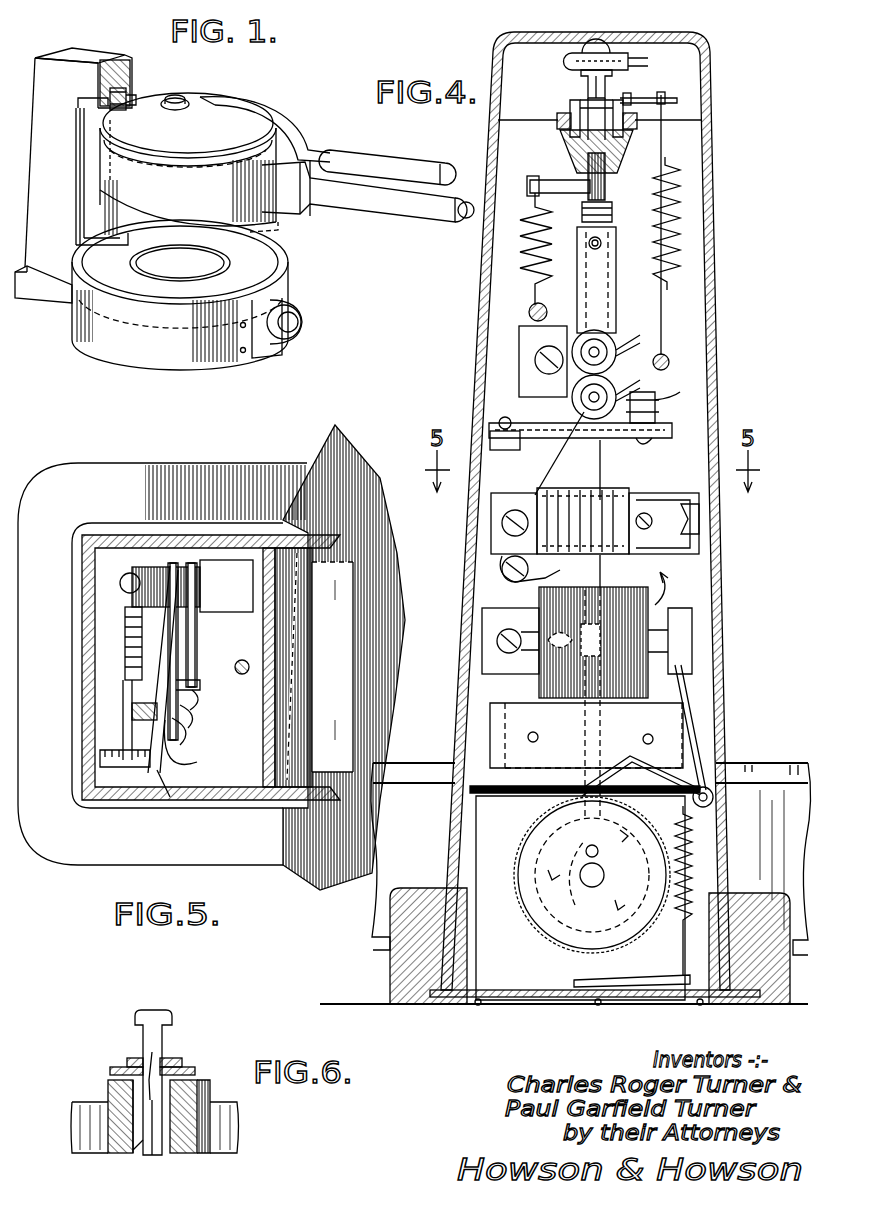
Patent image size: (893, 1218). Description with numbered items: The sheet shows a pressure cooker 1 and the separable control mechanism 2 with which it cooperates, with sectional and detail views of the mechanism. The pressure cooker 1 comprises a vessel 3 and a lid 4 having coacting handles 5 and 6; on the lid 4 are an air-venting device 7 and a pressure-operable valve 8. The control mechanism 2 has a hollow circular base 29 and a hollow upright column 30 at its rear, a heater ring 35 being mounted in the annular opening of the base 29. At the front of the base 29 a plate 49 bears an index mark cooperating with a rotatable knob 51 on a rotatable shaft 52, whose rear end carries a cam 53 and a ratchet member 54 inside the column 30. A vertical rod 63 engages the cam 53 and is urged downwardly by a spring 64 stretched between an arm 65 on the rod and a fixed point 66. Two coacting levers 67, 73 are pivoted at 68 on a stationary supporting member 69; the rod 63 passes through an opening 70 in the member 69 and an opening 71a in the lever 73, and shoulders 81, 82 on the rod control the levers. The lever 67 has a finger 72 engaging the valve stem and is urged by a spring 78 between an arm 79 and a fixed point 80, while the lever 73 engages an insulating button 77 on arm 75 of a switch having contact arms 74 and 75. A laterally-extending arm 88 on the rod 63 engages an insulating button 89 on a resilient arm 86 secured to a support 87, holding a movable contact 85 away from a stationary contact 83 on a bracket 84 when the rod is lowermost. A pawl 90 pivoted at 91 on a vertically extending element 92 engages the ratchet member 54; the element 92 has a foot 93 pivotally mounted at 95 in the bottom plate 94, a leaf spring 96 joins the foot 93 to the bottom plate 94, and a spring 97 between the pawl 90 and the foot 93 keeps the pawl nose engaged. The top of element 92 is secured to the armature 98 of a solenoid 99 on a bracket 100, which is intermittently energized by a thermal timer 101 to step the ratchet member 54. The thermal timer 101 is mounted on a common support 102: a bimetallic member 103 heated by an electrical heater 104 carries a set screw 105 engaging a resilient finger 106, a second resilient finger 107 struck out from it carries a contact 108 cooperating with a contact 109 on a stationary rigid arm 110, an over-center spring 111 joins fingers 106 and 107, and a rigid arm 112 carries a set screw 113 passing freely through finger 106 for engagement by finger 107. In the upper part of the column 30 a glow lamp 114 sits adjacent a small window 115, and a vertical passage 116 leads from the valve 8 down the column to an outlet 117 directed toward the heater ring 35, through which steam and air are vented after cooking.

In FIG. 1, the pressure cooker 1 is at (266, 126).
In FIG. 1, the control mechanism 2 is at (68, 328).
In FIG. 4, the control mechanism 2 is at (440, 760).
In FIG. 5, the control mechanism 2 is at (305, 462).
In FIG. 1, the vessel 3 is at (282, 232).
In FIG. 1, the lid 4 is at (228, 104).
In FIG. 1, the handle 5 is at (400, 224).
In FIG. 1, the handle 6 is at (386, 160).
In FIG. 1, the air-venting device 7 is at (150, 100).
In FIG. 1, the pressure-operable valve 8 is at (132, 93).
In FIG. 1, the hollow circular base 29 is at (148, 350).
In FIG. 4, the hollow circular base 29 is at (378, 876).
In FIG. 5, the hollow circular base 29 is at (348, 436).
In FIG. 1, the hollow upright column 30 is at (46, 68).
In FIG. 4, the hollow upright column 30 is at (718, 291).
In FIG. 5, the hollow upright column 30 is at (81, 597).
In FIG. 1, the heater ring 35 is at (246, 262).
In FIG. 5, the heater ring 35 is at (392, 620).
In FIG. 1, the plate 49 is at (267, 356).
In FIG. 1, the rotatable knob 51 is at (304, 322).
In FIG. 4, the rotatable shaft 52 is at (588, 885).
In FIG. 4, the cam 53 is at (565, 940).
In FIG. 4, the ratchet member 54 is at (536, 927).
In FIG. 4, the vertical rod 63 is at (602, 470).
In FIG. 5, the vertical rod 63 is at (236, 668).
In FIG. 6, the vertical rod 63 is at (160, 1140).
In FIG. 4, the spring 64 is at (520, 268).
In FIG. 4, the arm 65 is at (545, 178).
In FIG. 4, the fixed securing point 66 is at (530, 310).
In FIG. 4, the lever 67 is at (569, 107).
In FIG. 6, the lever 67 is at (196, 1071).
In FIG. 4, the pivot 68 is at (560, 125).
In FIG. 6, the stationary supporting member 69 is at (110, 1098).
In FIG. 6, the opening 70 is at (132, 1143).
In FIG. 6, the opening 71a is at (140, 1062).
In FIG. 1, the extending finger 72 is at (128, 90).
In FIG. 4, the lever 73 is at (618, 96).
In FIG. 6, the lever 73 is at (120, 1068).
In FIG. 4, the contact arm 74 is at (618, 272).
In FIG. 4, the contact arm 75 is at (602, 245).
In FIG. 4, the insulating button 77 is at (612, 214).
In FIG. 4, the spring 78 is at (680, 240).
In FIG. 4, the arm 79 is at (678, 98).
In FIG. 4, the fixed securing point 80 is at (665, 356).
In FIG. 6, the shoulder 81 is at (163, 1072).
In FIG. 4, the shoulder 82 is at (589, 78).
In FIG. 6, the shoulder 82 is at (160, 1012).
In FIG. 4, the stationary contact 83 is at (560, 420).
In FIG. 4, the bracket 84 is at (612, 374).
In FIG. 4, the movable contact 85 is at (541, 440).
In FIG. 4, the resilient arm 86 is at (572, 450).
In FIG. 4, the support 87 is at (660, 440).
In FIG. 4, the laterally-extending arm 88 is at (504, 418).
In FIG. 4, the insulating button 89 is at (500, 450).
In FIG. 4, the pawl 90 is at (630, 758).
In FIG. 4, the pivot 91 is at (714, 800).
In FIG. 4, the vertically extending element 92 is at (708, 755).
In FIG. 4, the foot 93 is at (696, 1004).
In FIG. 4, the bottom plate 94 is at (522, 1004).
In FIG. 4, the pivotal mounting 95 is at (636, 1004).
In FIG. 4, the leaf spring 96 is at (625, 982).
In FIG. 4, the spring 97 is at (672, 925).
In FIG. 4, the movable core or armature 98 is at (672, 606).
In FIG. 4, the solenoid 99 is at (539, 686).
In FIG. 4, the bracket 100 is at (500, 620).
In FIG. 5, the thermal timer 101 is at (122, 680).
In FIG. 4, the common support 102 is at (491, 523).
In FIG. 5, the common support 102 is at (236, 600).
In FIG. 4, the bimetallic member 103 is at (668, 549).
In FIG. 5, the bimetallic member 103 is at (130, 745).
In FIG. 4, the electrical heater 104 is at (615, 556).
In FIG. 5, the electrical heater 104 is at (124, 665).
In FIG. 4, the set screw 105 is at (700, 522).
In FIG. 5, the set screw 105 is at (100, 760).
In FIG. 5, the resilient finger 106 is at (171, 800).
In FIG. 5, the second resilient finger 107 is at (188, 738).
In FIG. 5, the contact 108 is at (190, 720).
In FIG. 5, the contact 109 is at (196, 702).
In FIG. 5, the stationary rigid arm 110 is at (198, 652).
In FIG. 5, the over-center spring 111 is at (197, 762).
In FIG. 5, the rigid arm 112 is at (160, 626).
In FIG. 4, the set screw 113 is at (648, 512).
In FIG. 5, the set screw 113 is at (140, 740).
In FIG. 4, the glow lamp 114 is at (571, 61).
In FIG. 4, the window 115 is at (597, 45).
In FIG. 1, the vertical passage 116 is at (78, 104).
In FIG. 5, the vertical passage 116 is at (290, 642).
In FIG. 1, the outlet 117 is at (78, 238).
In FIG. 5, the outlet 117 is at (345, 682).